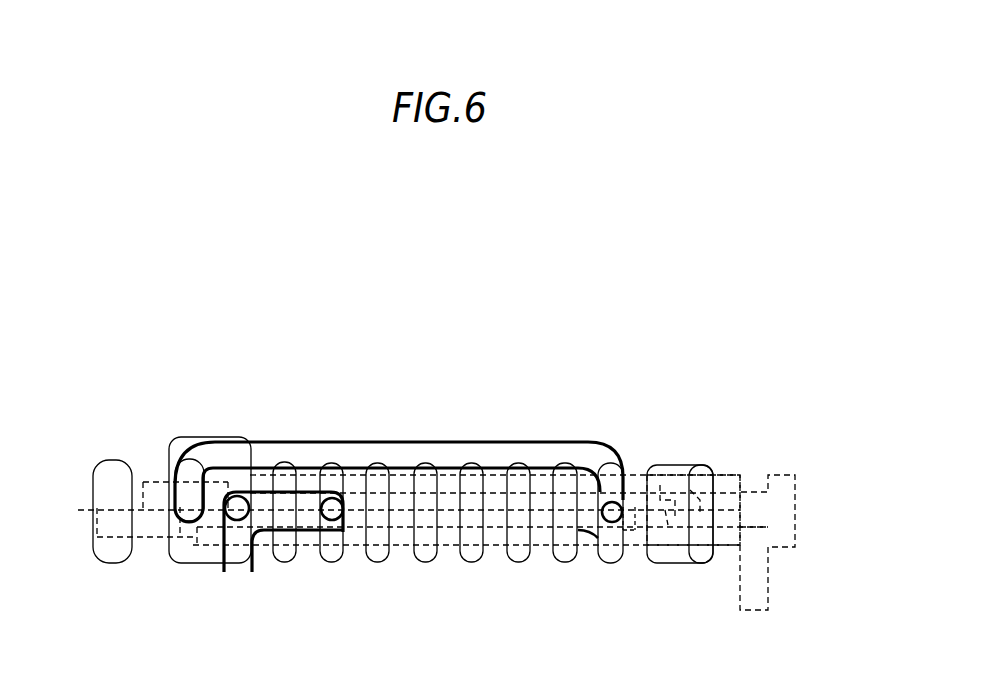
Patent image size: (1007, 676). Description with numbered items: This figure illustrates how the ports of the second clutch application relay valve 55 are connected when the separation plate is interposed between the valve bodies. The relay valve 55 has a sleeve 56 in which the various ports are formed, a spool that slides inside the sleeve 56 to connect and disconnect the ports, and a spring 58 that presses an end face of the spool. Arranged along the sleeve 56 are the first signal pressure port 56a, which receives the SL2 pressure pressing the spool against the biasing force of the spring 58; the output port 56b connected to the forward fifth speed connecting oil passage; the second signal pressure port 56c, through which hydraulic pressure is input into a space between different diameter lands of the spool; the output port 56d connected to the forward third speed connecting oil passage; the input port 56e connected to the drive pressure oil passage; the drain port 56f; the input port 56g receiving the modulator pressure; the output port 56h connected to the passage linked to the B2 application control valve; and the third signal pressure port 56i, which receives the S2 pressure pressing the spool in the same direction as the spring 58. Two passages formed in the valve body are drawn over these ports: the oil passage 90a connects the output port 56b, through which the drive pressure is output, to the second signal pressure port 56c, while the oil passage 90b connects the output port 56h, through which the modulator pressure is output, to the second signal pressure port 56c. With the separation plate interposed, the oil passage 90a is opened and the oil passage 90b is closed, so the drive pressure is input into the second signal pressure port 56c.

The second clutch application relay valve 55 is at (815, 480).
The sleeve 56 is at (96, 511).
The first signal pressure port 56a is at (108, 458).
The output port 56b is at (328, 462).
The second signal pressure port 56c is at (190, 456).
The output port 56d is at (421, 462).
The input port 56e is at (374, 462).
The drain port 56f is at (468, 462).
The input port 56g is at (561, 462).
The output port 56h is at (608, 462).
The third signal pressure port 56i is at (701, 463).
The spring 58 is at (634, 540).
The oil passage 90a is at (308, 534).
The oil passage 90b is at (262, 440).